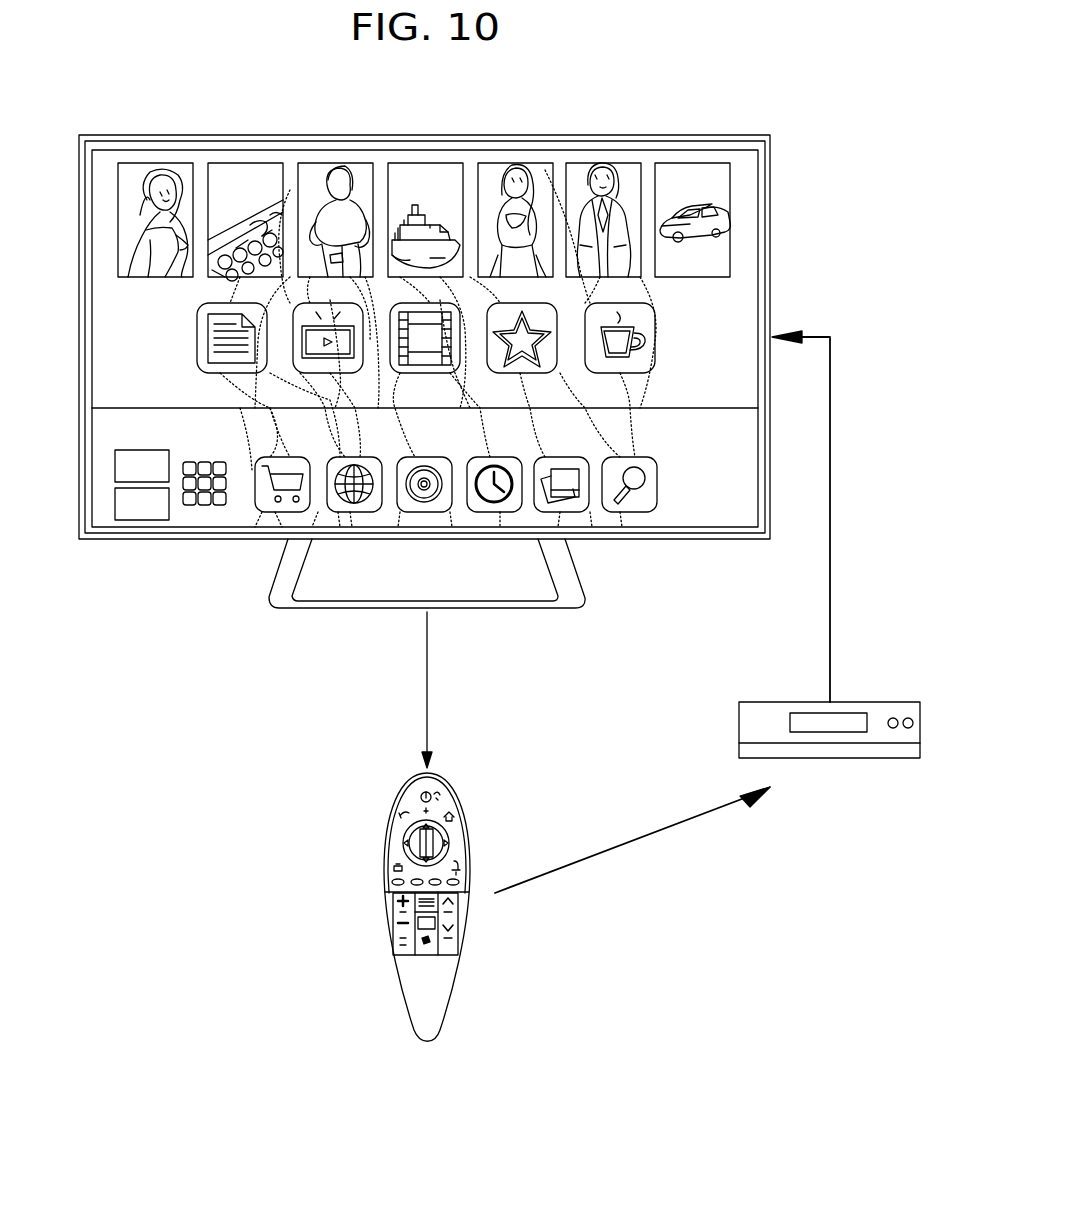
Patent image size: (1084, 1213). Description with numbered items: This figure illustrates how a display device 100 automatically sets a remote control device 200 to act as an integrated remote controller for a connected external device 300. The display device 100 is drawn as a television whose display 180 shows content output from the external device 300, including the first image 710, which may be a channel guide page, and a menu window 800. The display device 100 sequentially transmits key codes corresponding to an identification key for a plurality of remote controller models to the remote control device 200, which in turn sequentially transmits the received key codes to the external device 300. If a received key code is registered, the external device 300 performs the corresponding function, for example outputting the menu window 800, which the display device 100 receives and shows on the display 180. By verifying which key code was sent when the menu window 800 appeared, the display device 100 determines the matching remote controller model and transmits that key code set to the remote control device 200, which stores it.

The display device 100 is at (278, 578).
The display 180 is at (419, 128).
The menu window 800 is at (578, 138).
The first image 710 is at (743, 300).
The remote control device 200 is at (452, 985).
The external device 300 is at (838, 760).